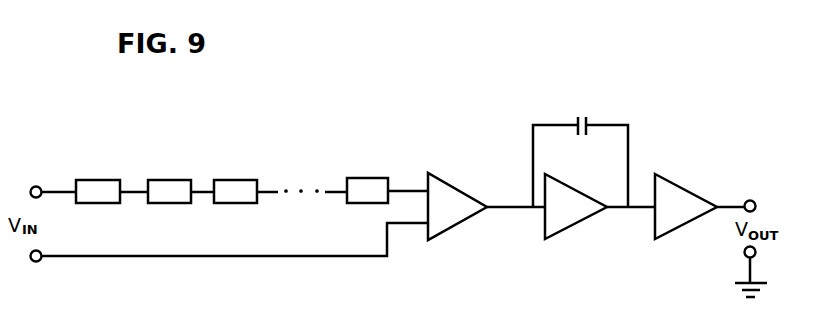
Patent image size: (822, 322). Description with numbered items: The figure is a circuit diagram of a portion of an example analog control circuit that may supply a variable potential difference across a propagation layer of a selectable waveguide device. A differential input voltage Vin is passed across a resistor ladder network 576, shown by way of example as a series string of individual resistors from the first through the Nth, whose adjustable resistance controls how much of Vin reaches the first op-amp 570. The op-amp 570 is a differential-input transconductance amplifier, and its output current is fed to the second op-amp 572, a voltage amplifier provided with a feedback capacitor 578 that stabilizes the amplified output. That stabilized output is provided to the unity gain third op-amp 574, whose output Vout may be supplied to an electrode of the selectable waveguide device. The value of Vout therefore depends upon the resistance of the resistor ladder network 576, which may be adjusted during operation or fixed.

The resistor ladder network 576 is at (172, 165).
The first operational amplifier 570 is at (460, 223).
The second operational amplifier 572 is at (585, 218).
The third operational amplifier 574 is at (685, 223).
The feedback capacitor 578 is at (577, 118).